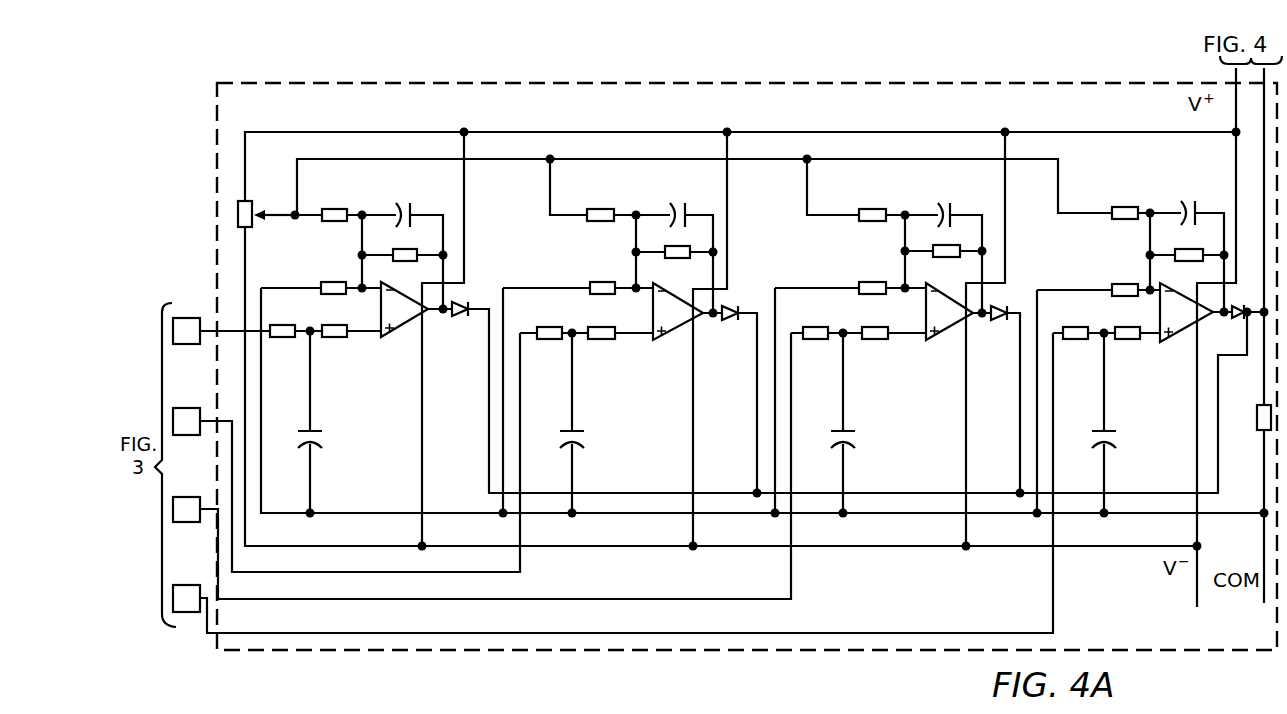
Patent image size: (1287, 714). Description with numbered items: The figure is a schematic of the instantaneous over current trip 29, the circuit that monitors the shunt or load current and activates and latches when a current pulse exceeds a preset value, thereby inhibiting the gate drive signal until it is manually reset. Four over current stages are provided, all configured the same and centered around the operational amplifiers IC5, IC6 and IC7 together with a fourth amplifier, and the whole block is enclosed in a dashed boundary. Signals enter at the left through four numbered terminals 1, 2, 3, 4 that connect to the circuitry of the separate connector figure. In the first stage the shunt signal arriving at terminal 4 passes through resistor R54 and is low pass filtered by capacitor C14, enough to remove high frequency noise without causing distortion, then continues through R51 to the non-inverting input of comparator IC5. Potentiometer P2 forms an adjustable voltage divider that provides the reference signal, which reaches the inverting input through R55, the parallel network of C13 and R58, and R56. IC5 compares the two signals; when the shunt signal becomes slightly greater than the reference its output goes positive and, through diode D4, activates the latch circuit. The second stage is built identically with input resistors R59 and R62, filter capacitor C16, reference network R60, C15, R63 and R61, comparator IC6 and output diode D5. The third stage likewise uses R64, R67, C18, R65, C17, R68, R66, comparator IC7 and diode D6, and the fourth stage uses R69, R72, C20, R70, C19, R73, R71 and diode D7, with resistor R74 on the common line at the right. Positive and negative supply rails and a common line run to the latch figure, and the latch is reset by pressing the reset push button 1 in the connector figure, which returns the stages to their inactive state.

The instantaneous over current trip 29 is at (422, 79).
The IOC reset push button 1 is at (186, 598).
The terminal 2 to FIG. 3 2 is at (186, 509).
The terminal 3 to FIG. 3 is at (186, 421).
The terminal 4 to FIG. 3 4 is at (186, 331).
The potentiometer P2 is at (250, 214).
The resistor R51 is at (342, 320).
The resistor R54 is at (285, 320).
The resistor R55 is at (334, 204).
The resistor R56 is at (332, 276).
The resistor R58 is at (401, 244).
The capacitor C13 is at (411, 205).
The capacitor C14 is at (334, 443).
The operational amplifier IC5 is at (404, 309).
The diode D4 is at (461, 322).
The resistor R59 is at (542, 321).
The resistor R60 is at (597, 205).
The resistor R61 is at (595, 277).
The resistor R62 is at (597, 321).
The resistor R63 is at (672, 265).
The capacitor C15 is at (676, 204).
The capacitor C16 is at (597, 440).
The operational amplifier IC6 is at (678, 311).
The diode D5 is at (729, 326).
The resistor R64 is at (811, 321).
The resistor R65 is at (869, 202).
The resistor R66 is at (869, 275).
The resistor R67 is at (877, 321).
The resistor R68 is at (942, 265).
The capacitor C17 is at (937, 204).
The capacitor C18 is at (866, 440).
The operational amplifier IC7 is at (949, 311).
The diode D6 is at (1001, 328).
The resistor R69 is at (1071, 323).
The resistor R70 is at (1121, 201).
The resistor R71 is at (1118, 277).
The resistor R72 is at (1126, 323).
The resistor R73 is at (1181, 247).
The resistor R74 is at (1245, 409).
The capacitor C19 is at (1203, 202).
The capacitor C20 is at (1126, 441).
The diode D7 is at (1225, 326).